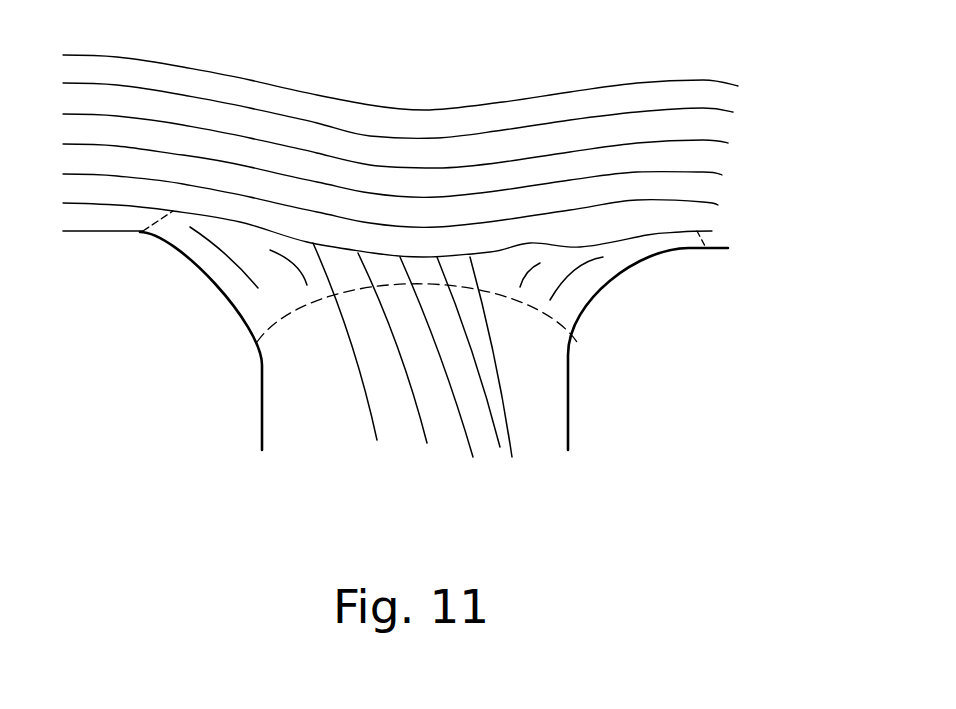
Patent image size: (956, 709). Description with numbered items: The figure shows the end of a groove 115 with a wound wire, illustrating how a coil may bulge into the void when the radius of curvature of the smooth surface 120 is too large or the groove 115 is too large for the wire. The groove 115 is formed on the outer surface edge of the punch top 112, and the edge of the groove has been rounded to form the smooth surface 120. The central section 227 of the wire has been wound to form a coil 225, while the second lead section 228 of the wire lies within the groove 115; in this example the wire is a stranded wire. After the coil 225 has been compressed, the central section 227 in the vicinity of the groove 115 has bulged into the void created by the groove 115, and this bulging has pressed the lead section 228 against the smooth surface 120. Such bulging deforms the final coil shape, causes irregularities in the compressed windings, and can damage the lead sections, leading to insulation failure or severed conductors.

The punch top 112 is at (201, 382).
The groove 115 is at (540, 397).
The smooth surface 120 is at (587, 280).
The coil 225 is at (420, 107).
The central section of the wire 227 is at (730, 191).
The second lead section of the wire 228 is at (452, 458).